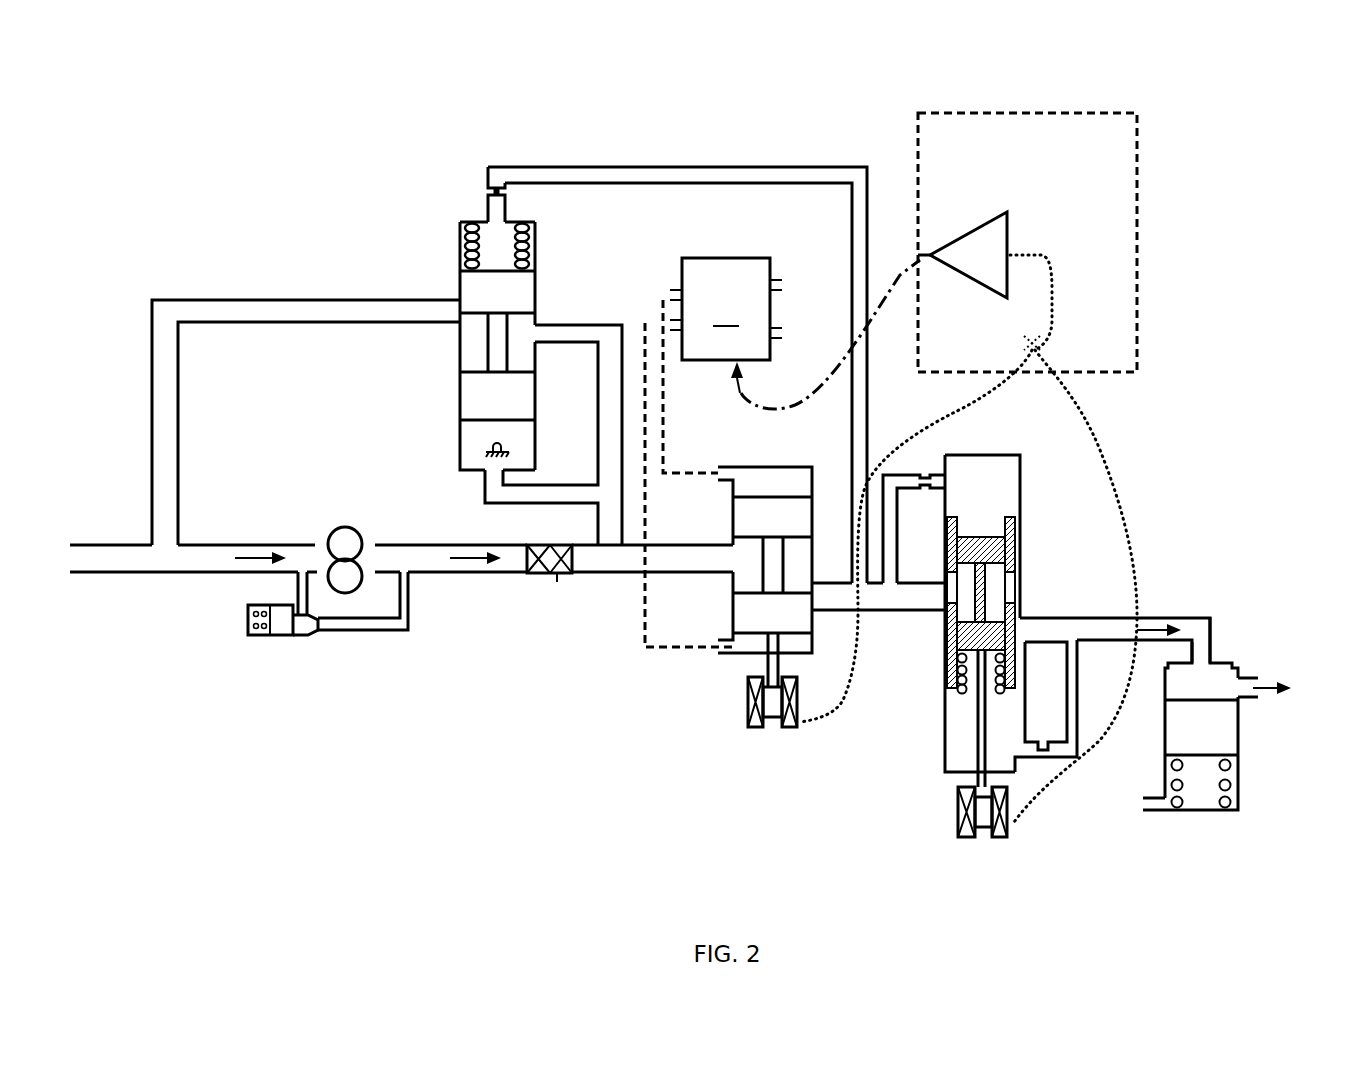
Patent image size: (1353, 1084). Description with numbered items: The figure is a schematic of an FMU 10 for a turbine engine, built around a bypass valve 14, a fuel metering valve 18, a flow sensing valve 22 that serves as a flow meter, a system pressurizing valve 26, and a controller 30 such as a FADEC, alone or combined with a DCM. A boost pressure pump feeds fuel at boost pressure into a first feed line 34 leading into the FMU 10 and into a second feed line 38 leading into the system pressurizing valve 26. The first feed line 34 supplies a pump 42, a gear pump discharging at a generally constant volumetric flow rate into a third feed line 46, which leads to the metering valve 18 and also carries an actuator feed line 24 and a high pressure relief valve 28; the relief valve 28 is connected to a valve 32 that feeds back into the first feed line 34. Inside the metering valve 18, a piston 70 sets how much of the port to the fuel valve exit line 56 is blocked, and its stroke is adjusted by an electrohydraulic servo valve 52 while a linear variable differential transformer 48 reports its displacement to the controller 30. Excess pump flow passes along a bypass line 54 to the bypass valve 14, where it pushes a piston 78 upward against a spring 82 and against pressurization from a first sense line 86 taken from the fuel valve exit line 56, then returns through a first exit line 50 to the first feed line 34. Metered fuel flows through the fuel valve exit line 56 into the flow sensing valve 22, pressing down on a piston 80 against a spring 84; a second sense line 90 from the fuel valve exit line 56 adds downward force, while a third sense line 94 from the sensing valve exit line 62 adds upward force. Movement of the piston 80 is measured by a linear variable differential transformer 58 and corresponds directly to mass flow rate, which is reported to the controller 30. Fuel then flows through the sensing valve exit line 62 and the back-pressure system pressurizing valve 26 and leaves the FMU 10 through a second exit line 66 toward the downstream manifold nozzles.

The FMU 10 is at (689, 92).
The bypass valve 14 is at (452, 283).
The fuel metering valve 18 is at (812, 663).
The flow sensing valve 22 is at (930, 767).
The actuator feed line 24 is at (538, 577).
The system pressurizing valve 26 is at (1250, 805).
The high pressure relief valve 28 is at (380, 630).
The controller 30 is at (1140, 262).
The valve 32 is at (260, 636).
The first feed line 34 is at (170, 573).
The second feed line 38 is at (1145, 811).
The pump 42 is at (345, 593).
The third feed line 46 is at (472, 573).
The linear variable differential transformer 48 is at (753, 722).
The first exit line 50 is at (196, 313).
The electrohydraulic servo valve 52 is at (782, 452).
The bypass line 54 is at (597, 403).
The fuel valve exit line 56 is at (908, 593).
The linear variable differential transformer 58 is at (967, 837).
The sensing valve exit line 62 is at (1040, 628).
The second exit line 66 is at (1243, 678).
The piston 70 is at (780, 493).
The piston 78 is at (507, 270).
The piston 80 is at (983, 537).
The spring 82 is at (462, 222).
The spring 84 is at (1003, 695).
The first sense line 86 is at (752, 167).
The second sense line 90 is at (897, 477).
The third sense line 94 is at (1072, 702).